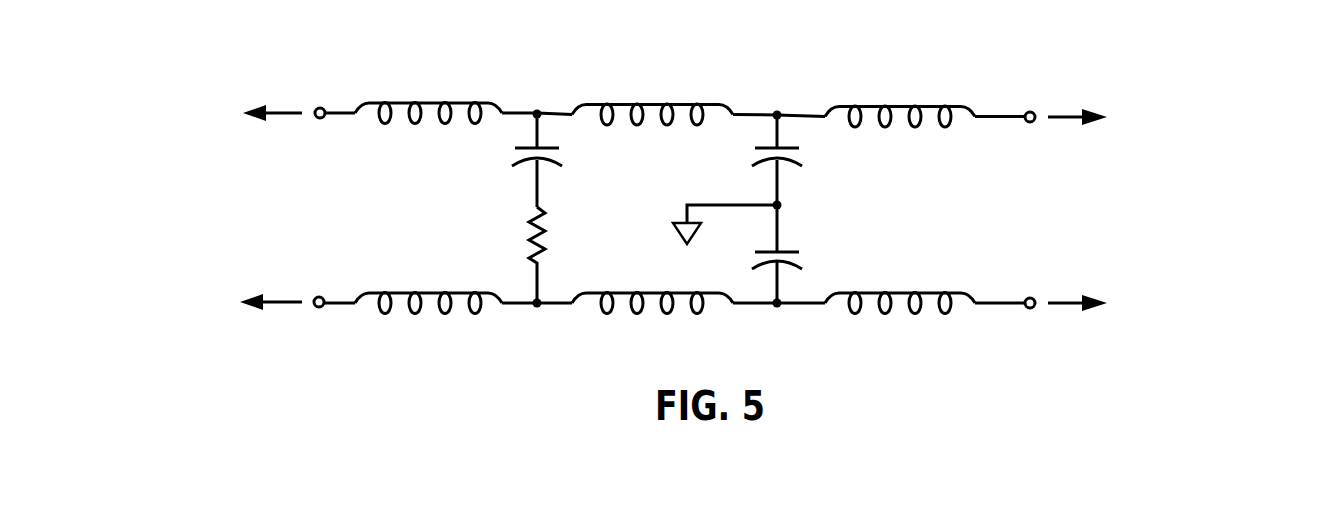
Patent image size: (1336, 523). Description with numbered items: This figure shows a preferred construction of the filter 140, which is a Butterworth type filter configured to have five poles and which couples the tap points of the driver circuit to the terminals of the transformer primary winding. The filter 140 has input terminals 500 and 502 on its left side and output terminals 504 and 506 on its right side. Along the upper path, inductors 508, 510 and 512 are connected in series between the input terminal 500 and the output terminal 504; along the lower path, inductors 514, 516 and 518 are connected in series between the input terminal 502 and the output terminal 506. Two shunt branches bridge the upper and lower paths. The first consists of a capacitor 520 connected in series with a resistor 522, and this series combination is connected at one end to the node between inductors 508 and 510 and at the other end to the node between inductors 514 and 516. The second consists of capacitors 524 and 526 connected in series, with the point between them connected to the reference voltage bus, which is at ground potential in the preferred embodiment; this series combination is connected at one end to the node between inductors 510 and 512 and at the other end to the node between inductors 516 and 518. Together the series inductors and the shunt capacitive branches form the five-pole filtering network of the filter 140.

The filter 140 is at (762, 62).
The input terminal 500 is at (317, 118).
The input terminal 502 is at (316, 307).
The output terminal 504 is at (1034, 112).
The output terminal 506 is at (1034, 298).
The inductor 508 is at (400, 103).
The inductor 510 is at (622, 104).
The inductor 512 is at (872, 105).
The inductor 514 is at (400, 292).
The inductor 516 is at (622, 292).
The inductor 518 is at (935, 292).
The capacitor 520 is at (516, 161).
The resistor 522 is at (531, 244).
The capacitor 524 is at (757, 162).
The capacitor 526 is at (786, 254).